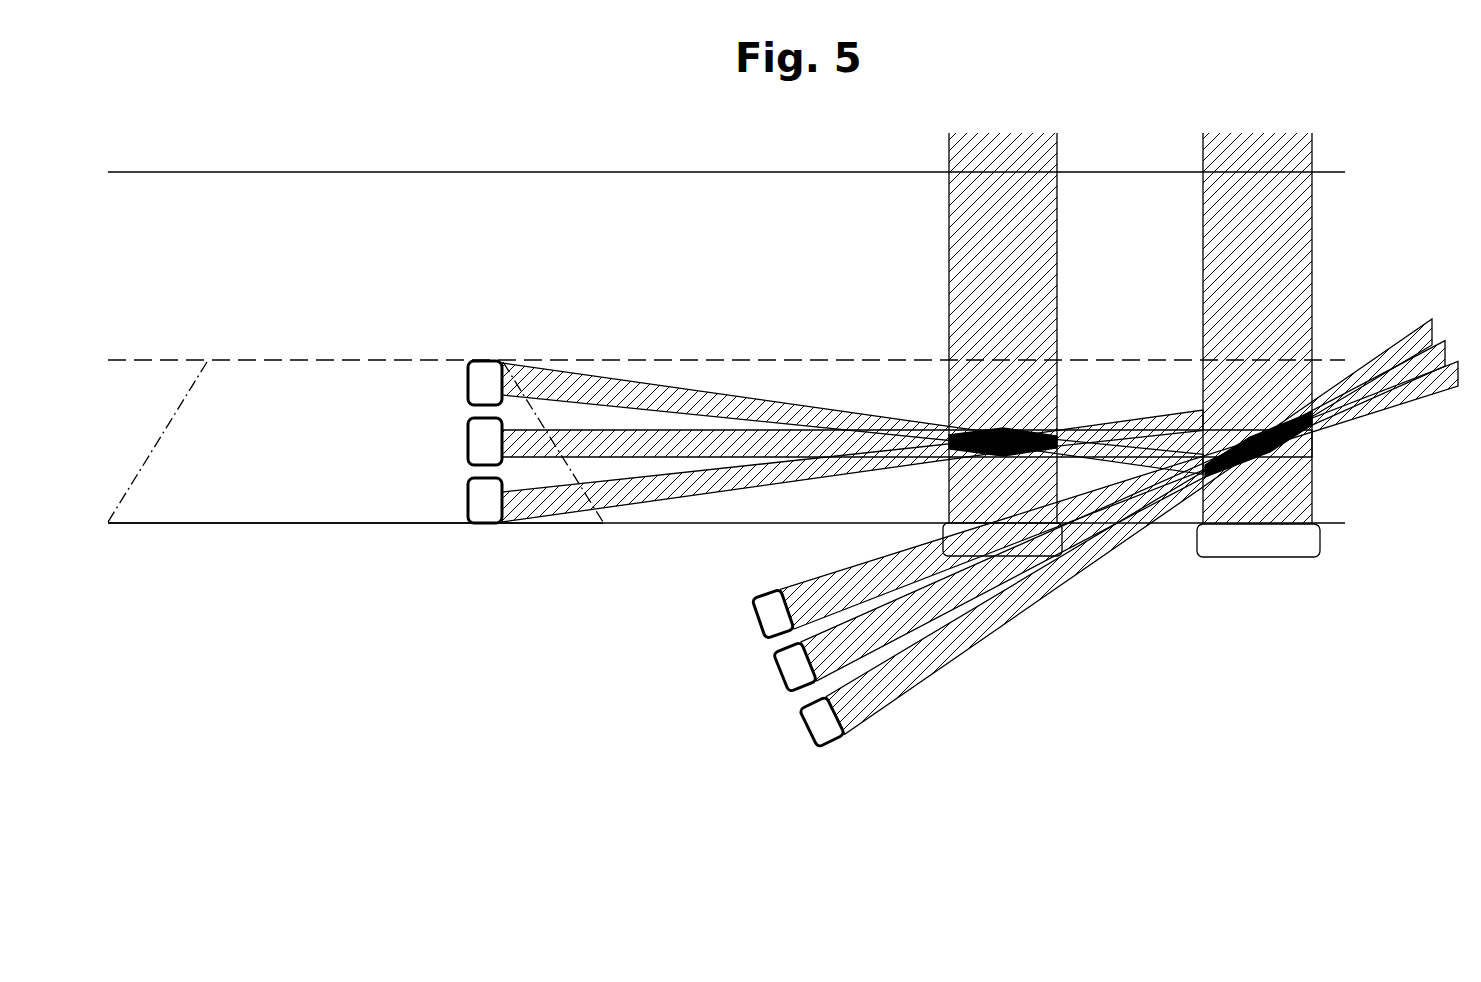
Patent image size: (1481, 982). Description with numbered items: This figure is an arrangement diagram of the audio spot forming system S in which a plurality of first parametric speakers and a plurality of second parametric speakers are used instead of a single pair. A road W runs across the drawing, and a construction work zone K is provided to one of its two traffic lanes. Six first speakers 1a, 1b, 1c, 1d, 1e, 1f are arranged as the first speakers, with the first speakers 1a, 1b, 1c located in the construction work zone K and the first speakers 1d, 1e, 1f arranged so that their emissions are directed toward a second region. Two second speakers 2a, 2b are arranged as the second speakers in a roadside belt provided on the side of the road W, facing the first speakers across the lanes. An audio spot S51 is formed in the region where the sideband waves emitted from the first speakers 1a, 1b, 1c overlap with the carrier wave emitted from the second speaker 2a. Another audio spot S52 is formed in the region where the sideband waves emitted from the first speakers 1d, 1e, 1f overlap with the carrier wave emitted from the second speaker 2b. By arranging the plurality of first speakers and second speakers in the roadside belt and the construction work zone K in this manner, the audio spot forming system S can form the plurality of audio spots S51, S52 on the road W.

The first speaker 1a is at (468, 383).
The first speaker 1b is at (468, 440).
The first speaker 1c is at (468, 497).
The first speaker 1d is at (757, 617).
The first speaker 1e is at (782, 672).
The first speaker 1f is at (812, 725).
The second speaker 2a is at (943, 527).
The second speaker 2b is at (1266, 557).
The audio spot S51 is at (982, 431).
The audio spot S52 is at (1243, 437).
The road W is at (565, 194).
The construction work zone K is at (301, 473).
The audio spot forming system S is at (583, 716).